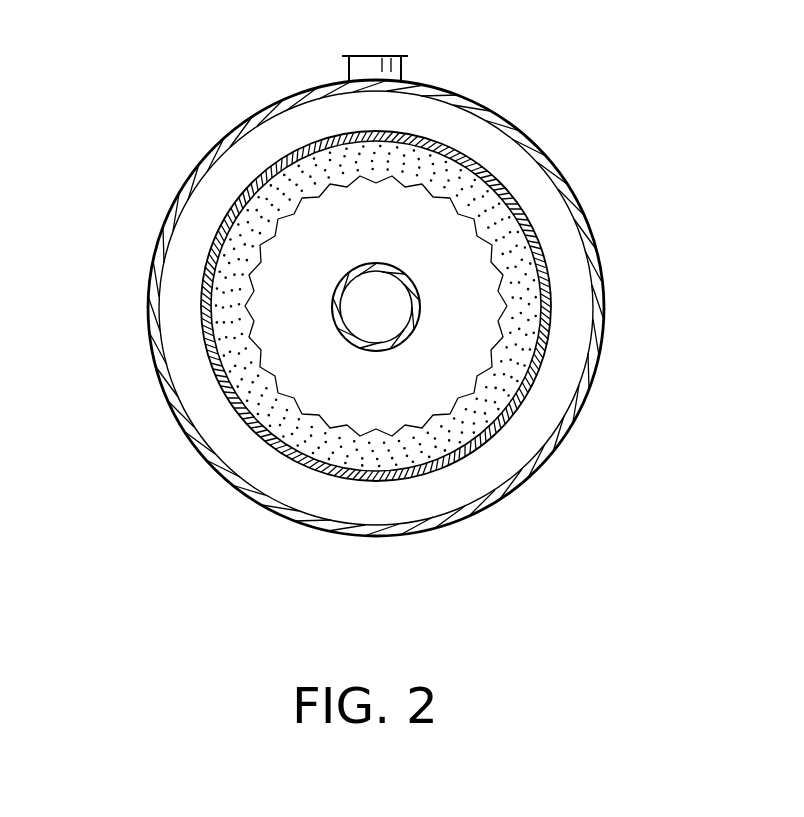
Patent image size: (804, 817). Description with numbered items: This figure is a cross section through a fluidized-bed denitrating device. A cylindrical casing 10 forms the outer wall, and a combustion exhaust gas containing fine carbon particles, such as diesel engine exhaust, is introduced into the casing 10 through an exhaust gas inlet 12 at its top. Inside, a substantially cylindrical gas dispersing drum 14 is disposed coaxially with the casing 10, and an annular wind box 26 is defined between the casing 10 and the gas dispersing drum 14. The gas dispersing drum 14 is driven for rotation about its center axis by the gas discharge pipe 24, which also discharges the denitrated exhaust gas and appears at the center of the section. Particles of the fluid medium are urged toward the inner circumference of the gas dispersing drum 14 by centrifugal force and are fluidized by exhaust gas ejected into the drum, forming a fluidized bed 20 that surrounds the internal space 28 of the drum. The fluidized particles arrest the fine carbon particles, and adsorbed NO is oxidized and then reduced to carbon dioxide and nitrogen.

The cylindrical casing 10 is at (590, 217).
The exhaust gas inlet 12 is at (403, 68).
The gas dispersing drum 14 is at (515, 413).
The fluidized bed 20 is at (447, 435).
The gas discharge pipe 24 is at (334, 322).
The annular wind box 26 is at (580, 340).
The internal space 28 is at (270, 317).